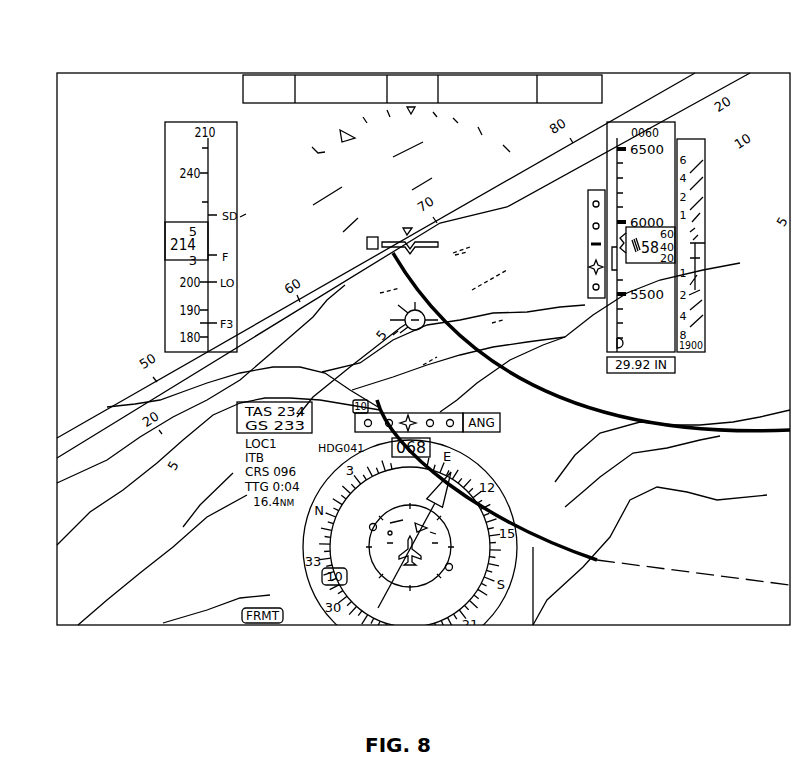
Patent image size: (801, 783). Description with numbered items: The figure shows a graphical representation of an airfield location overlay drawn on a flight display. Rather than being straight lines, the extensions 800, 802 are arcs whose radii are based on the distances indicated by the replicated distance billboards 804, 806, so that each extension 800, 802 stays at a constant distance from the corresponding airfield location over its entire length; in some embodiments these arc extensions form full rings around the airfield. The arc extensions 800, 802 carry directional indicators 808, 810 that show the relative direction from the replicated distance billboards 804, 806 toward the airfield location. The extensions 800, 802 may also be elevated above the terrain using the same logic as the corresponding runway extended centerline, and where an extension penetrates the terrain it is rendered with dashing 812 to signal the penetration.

The extension 800 is at (567, 398).
The extension 802 is at (533, 547).
The replicated distance billboard 804 is at (366, 243).
The replicated distance billboard 806 is at (62, 549).
The directional indicator 808 is at (392, 242).
The directional indicator 810 is at (107, 407).
The dashing 812 is at (672, 573).